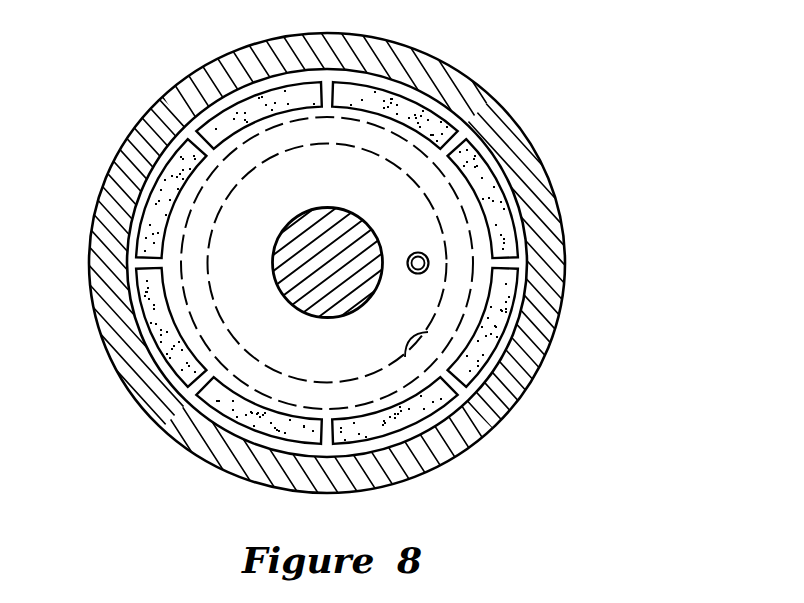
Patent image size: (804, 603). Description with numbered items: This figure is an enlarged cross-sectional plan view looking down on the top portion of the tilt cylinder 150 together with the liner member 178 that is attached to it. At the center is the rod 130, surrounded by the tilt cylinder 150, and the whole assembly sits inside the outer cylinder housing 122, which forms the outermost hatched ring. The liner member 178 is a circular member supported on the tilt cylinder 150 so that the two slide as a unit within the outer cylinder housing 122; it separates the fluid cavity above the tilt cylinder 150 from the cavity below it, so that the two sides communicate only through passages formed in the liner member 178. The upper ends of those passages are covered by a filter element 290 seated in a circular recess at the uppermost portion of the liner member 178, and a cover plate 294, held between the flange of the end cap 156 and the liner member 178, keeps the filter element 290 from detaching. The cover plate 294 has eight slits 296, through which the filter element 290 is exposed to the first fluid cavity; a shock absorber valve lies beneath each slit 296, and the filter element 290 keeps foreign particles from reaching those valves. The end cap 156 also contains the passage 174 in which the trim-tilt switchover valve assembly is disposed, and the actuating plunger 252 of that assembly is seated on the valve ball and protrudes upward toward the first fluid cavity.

The outer cylinder housing 122 is at (565, 262).
The liner member 178 is at (497, 149).
The cover plate 294 is at (510, 198).
The filter element 290 is at (507, 233).
The slits 296 is at (173, 162).
The end cap 156 is at (373, 138).
The rod 130 is at (327, 272).
The passage 174 is at (412, 254).
The actuating plunger 252 is at (428, 264).
The tilt cylinder 150 is at (428, 332).